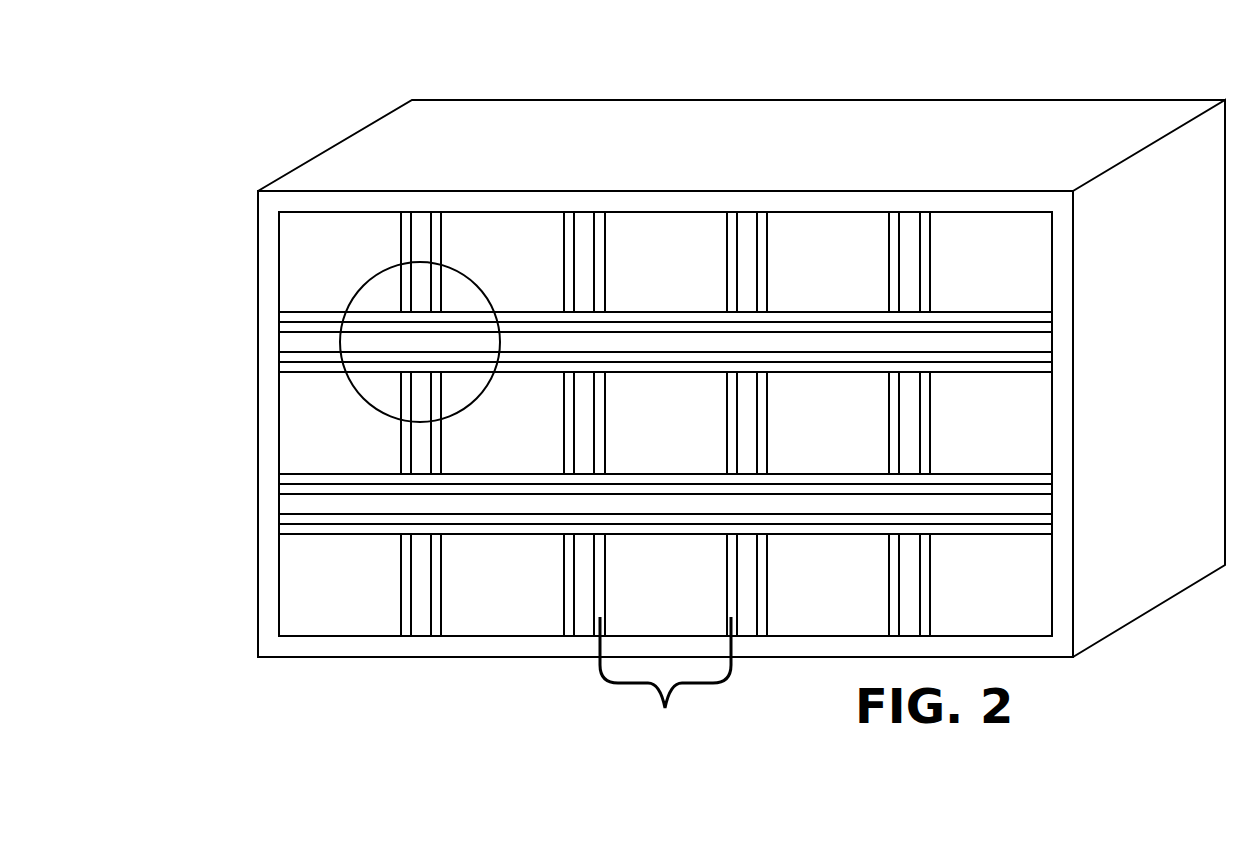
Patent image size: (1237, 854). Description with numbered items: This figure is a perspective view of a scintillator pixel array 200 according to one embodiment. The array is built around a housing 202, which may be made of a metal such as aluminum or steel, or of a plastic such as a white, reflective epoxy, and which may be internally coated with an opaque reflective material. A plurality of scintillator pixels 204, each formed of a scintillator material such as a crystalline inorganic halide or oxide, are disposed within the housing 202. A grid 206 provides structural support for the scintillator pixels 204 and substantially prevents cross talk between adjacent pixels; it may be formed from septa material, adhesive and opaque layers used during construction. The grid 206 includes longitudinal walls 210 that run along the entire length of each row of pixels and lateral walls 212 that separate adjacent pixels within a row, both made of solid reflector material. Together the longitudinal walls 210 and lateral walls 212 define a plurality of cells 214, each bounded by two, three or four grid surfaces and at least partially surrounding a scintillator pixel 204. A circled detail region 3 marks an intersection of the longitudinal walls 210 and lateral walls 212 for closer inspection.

The enclosure assembly 200 is at (274, 139).
The housing 202 is at (741, 138).
The scintillator pixels 204 is at (665, 243).
The grid 206 is at (637, 600).
The longitudinal walls 210 is at (608, 336).
The lateral walls 212 is at (608, 480).
The cells 214 is at (665, 683).
The detail region of FIG. 3 is at (411, 336).